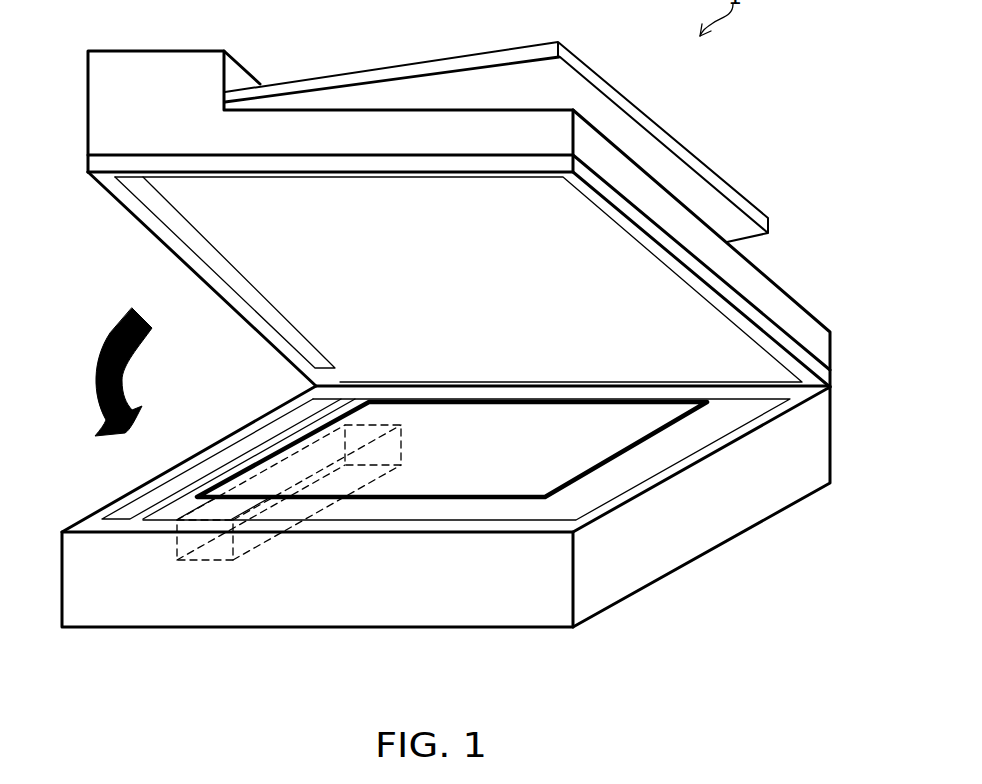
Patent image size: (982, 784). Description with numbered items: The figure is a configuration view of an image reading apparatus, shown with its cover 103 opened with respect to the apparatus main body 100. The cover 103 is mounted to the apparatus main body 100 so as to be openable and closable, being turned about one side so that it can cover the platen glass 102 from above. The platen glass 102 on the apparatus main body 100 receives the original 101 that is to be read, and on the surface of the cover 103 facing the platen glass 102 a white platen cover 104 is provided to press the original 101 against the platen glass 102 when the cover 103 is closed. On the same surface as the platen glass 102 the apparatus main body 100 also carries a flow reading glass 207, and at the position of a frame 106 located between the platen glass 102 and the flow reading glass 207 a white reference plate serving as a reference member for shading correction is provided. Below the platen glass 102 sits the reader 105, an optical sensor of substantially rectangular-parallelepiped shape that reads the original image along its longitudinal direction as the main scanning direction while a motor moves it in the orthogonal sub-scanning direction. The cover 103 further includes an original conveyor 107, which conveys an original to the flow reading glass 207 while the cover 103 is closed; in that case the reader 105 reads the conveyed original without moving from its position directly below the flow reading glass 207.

The apparatus main body 100 is at (412, 602).
The original 101 is at (555, 488).
The platen glass 102 is at (707, 423).
The cover 103 is at (88, 164).
The platen cover 104 is at (195, 210).
The reader 105 is at (283, 510).
The frame 106 is at (158, 508).
The original conveyor 107 is at (88, 78).
The flow reading glass 207 is at (130, 508).